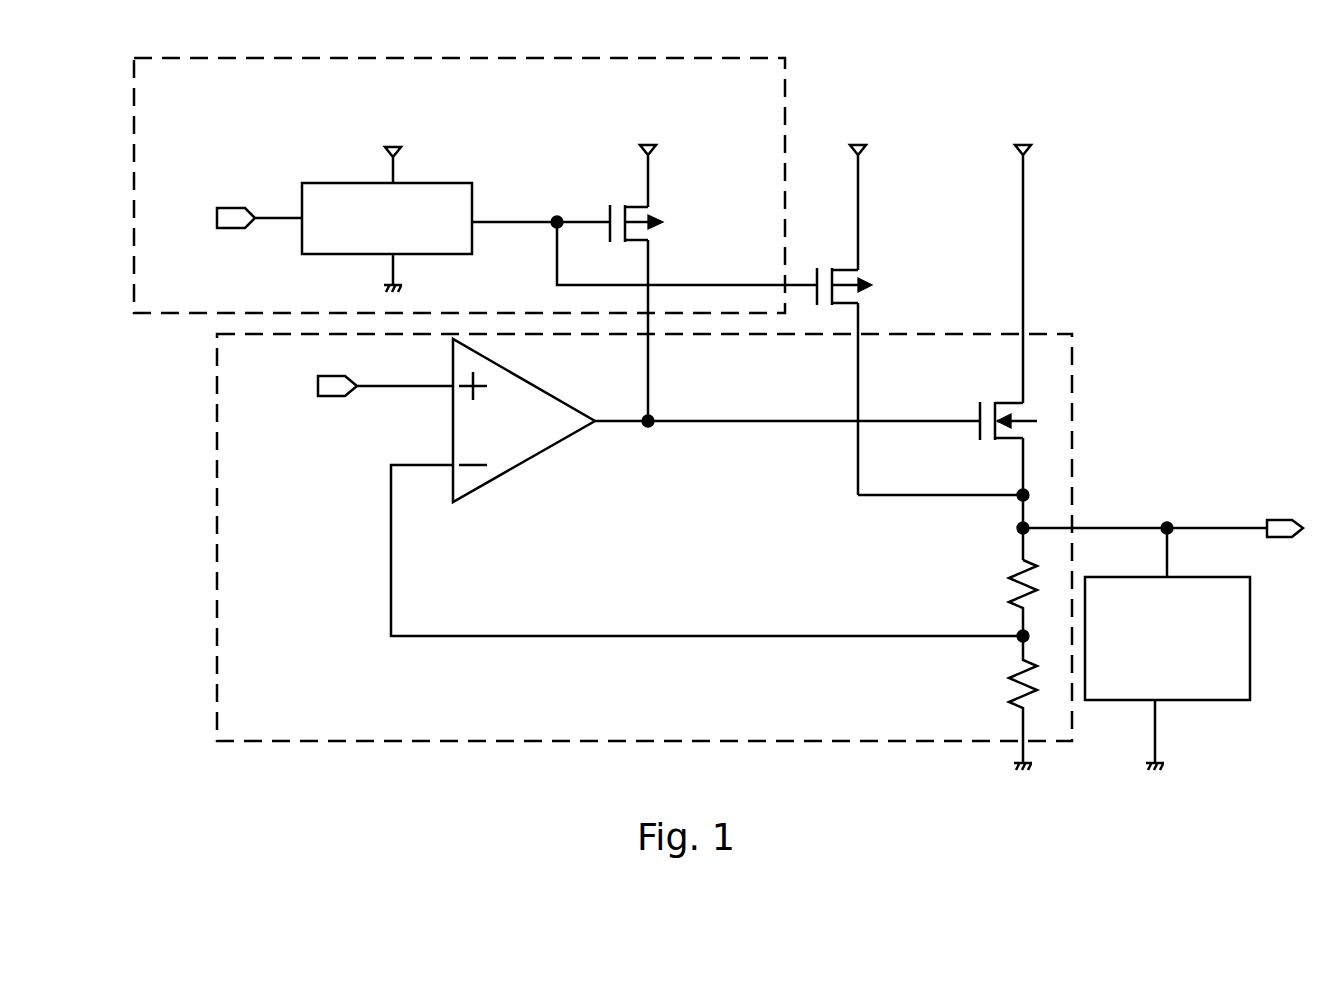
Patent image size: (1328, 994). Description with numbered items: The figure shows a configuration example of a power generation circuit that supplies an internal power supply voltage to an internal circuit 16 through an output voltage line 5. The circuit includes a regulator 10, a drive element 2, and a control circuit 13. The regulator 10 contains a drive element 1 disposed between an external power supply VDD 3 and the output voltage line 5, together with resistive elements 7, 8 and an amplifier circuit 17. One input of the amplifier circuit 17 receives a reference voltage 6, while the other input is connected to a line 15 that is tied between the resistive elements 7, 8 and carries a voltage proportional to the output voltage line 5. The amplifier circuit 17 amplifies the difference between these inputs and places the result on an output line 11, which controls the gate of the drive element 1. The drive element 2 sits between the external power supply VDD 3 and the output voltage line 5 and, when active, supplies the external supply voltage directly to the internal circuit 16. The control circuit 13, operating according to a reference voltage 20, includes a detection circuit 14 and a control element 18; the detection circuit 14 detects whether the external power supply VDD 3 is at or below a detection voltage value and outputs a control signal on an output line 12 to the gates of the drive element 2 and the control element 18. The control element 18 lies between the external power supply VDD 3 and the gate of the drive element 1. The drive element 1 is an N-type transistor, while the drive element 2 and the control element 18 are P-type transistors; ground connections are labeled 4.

The drive element 1 is at (1030, 410).
The drive element 2 is at (863, 273).
The external power supply VDD 3 is at (393, 146).
The ground terminal 4 is at (424, 255).
The output voltage line 5 is at (1217, 527).
The reference voltage 6 is at (330, 395).
The resistive element 7 is at (1010, 587).
The resistive element 8 is at (1012, 680).
The regulator 10 is at (380, 742).
The output line 11 is at (692, 422).
The output line 12 is at (687, 287).
The control circuit 13 is at (323, 55).
The detection circuit 14 is at (461, 183).
The line 15 is at (737, 635).
The internal circuit 16 is at (1213, 702).
The amplifier circuit 17 is at (545, 447).
The control element 18 is at (652, 212).
The reference voltage 20 is at (226, 208).